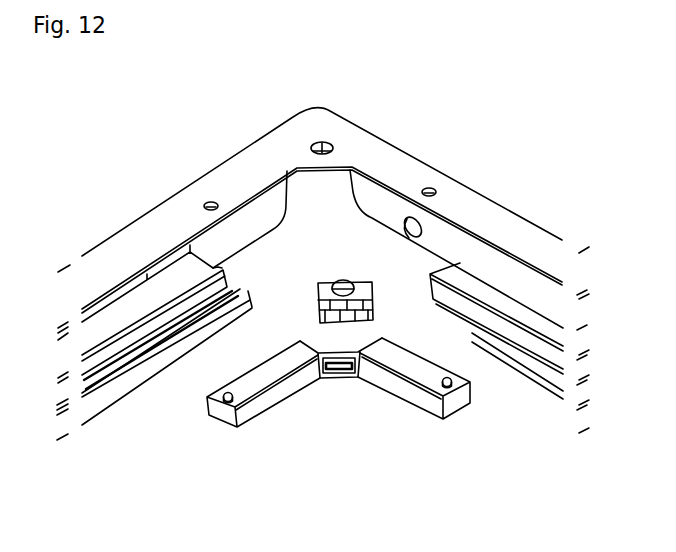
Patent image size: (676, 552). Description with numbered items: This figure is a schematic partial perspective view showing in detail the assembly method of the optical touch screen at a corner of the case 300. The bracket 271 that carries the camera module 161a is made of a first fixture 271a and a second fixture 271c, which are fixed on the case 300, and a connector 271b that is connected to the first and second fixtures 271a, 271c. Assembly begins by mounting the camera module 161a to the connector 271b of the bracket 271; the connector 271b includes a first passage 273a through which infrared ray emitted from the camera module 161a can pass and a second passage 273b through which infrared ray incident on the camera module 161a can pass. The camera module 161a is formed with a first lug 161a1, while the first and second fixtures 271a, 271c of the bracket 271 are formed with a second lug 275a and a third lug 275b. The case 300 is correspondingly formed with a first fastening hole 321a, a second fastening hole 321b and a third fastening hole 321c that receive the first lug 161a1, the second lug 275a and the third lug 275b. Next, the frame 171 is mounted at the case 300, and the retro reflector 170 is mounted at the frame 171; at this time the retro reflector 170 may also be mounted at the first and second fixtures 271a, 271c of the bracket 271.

The case 300 is at (382, 150).
The first fastening hole 321a is at (322, 147).
The second fastening hole 321b is at (211, 203).
The third fastening hole 321c is at (430, 190).
The frame 171 is at (138, 305).
The retro reflector 170 is at (133, 387).
The camera module 161a is at (317, 277).
The first lug 161a1 is at (342, 284).
The bracket 271 is at (328, 414).
The first fixture 271a is at (241, 410).
The connector 271b is at (295, 379).
The second fixture 271c is at (426, 407).
The first passage 273a is at (334, 362).
The second passage 273b is at (342, 380).
The second lug 275a is at (228, 398).
The third lug 275b is at (448, 386).